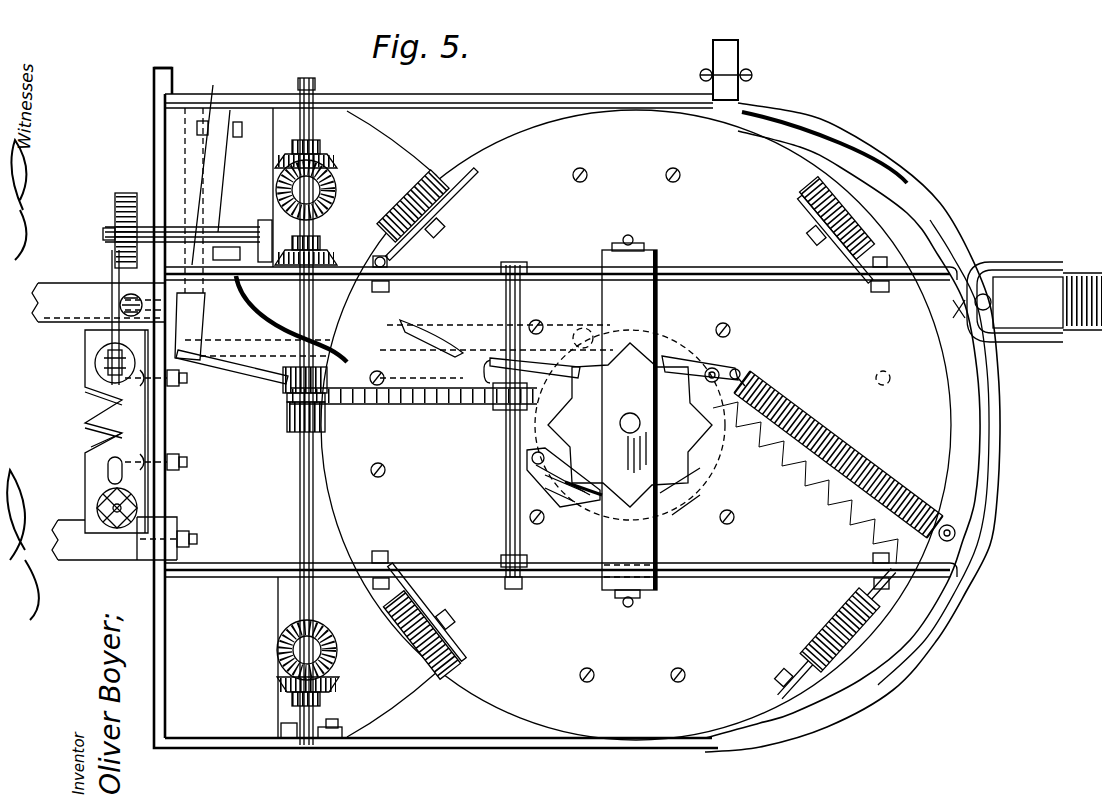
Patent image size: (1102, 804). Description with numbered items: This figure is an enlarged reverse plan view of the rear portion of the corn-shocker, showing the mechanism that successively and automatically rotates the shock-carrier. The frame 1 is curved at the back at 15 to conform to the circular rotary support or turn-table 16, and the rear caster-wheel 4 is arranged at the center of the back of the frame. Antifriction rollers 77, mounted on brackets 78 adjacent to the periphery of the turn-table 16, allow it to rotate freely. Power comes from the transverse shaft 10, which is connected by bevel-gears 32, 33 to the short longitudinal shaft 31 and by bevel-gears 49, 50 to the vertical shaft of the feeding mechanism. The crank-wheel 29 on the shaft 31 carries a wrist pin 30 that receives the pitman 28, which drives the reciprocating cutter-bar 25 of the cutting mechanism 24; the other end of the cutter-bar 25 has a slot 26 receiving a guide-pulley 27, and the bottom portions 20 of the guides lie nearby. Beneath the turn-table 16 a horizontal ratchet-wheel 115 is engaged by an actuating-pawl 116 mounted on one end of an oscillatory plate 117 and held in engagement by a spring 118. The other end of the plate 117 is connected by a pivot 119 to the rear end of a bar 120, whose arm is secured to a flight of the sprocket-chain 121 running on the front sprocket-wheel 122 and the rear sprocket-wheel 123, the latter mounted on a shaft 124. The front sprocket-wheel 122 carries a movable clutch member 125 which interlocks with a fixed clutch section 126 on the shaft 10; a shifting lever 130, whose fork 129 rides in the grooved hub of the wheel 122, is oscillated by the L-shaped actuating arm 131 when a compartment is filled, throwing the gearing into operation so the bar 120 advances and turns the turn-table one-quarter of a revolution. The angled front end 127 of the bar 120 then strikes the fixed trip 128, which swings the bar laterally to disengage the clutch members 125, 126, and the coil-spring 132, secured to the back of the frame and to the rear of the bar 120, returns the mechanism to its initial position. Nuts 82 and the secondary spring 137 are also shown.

The frame 1 is at (178, 616).
The rear caster-wheel 4 is at (1010, 285).
The transverse shaft 10 is at (302, 522).
The curved back of the supporting-frame 15 is at (1000, 450).
The rotary support or turn-table 16 is at (636, 425).
The bottom bars or portions 20 is at (30, 300).
The cutting mechanism 24 is at (86, 420).
The reciprocating cutter-bar 25 is at (94, 353).
The slot 26 is at (108, 480).
The guide-pulley 27 is at (112, 522).
The pitman 28 is at (112, 284).
The crank-wheel 29 is at (126, 193).
The crank or wrist pin 30 is at (103, 234).
The short longitudinal shaft 31 is at (236, 230).
The bevel-gear 32 is at (280, 212).
The bevel-gear 33 is at (318, 258).
The bevel-gear 49 is at (336, 190).
The bevel-gear 50 is at (330, 162).
The rollers 77 is at (452, 190).
The brackets 78 is at (452, 214).
The nut 82 is at (582, 186).
The ratchet-wheel 115 is at (690, 452).
The actuating-pawl 116 is at (590, 500).
The oscillatory plate or member 117 is at (550, 447).
The spring 118 is at (535, 482).
The pivot 119 is at (606, 320).
The bar 120 is at (470, 372).
The sprocket-chain 121 is at (382, 400).
The front sprocket-wheel 122 is at (284, 382).
The rear sprocket-wheel 123 is at (520, 368).
The shaft 124 is at (506, 463).
The movable clutch member or section 125 is at (326, 398).
The fixed clutch section or member 126 is at (292, 432).
The front end of the bar 127 is at (412, 328).
The fixed trip 128 is at (305, 318).
The fork or bifurcated arm 129 is at (250, 377).
The shifting lever 130 is at (182, 143).
The actuating arm or device 131 is at (206, 100).
The coil-spring 132 is at (832, 430).
The spring 137 is at (805, 470).